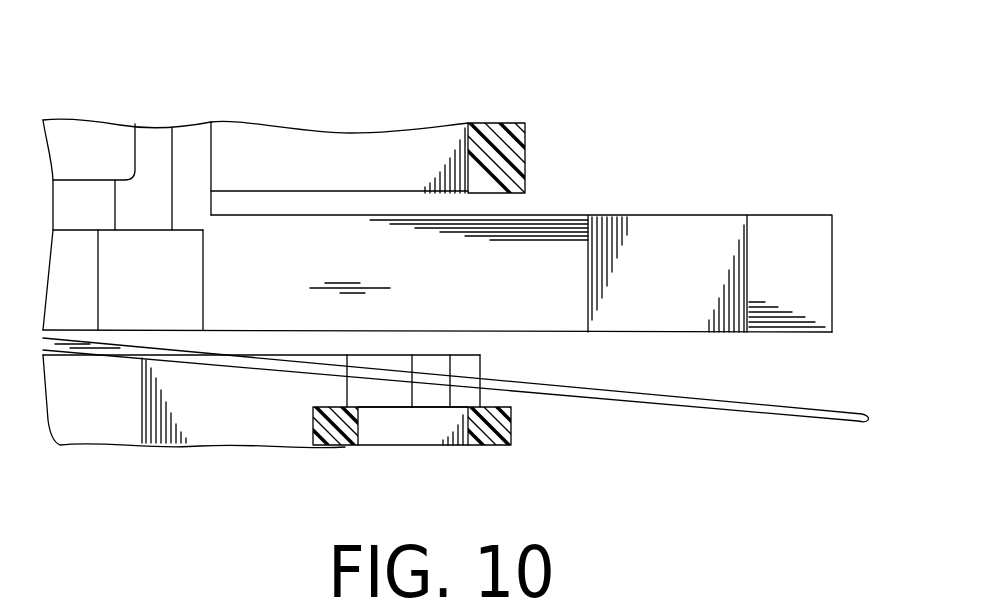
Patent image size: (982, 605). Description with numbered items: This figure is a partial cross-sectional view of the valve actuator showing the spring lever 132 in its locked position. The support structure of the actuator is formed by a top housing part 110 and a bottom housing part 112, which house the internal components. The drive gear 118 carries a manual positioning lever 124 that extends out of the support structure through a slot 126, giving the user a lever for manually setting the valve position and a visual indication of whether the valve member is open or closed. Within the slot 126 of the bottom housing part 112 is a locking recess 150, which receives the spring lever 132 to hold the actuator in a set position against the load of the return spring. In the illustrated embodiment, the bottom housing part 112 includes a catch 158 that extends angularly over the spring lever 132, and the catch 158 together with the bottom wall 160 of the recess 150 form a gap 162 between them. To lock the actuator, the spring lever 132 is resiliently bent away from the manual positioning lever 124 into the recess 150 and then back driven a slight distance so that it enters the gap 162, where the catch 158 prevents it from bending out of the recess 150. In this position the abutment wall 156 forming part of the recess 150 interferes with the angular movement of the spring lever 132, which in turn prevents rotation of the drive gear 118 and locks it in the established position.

The drive gear 118 is at (193, 138).
The top housing part 110 is at (528, 150).
The slot 126 is at (545, 205).
The manual positioning lever 124 is at (785, 235).
The gap 162 is at (325, 392).
The locking recess 150 is at (505, 372).
The catch 158 is at (403, 365).
The abutment wall 156 is at (400, 395).
The bottom housing part 112 is at (511, 418).
The bottom wall 160 is at (487, 402).
The spring lever 132 is at (756, 417).